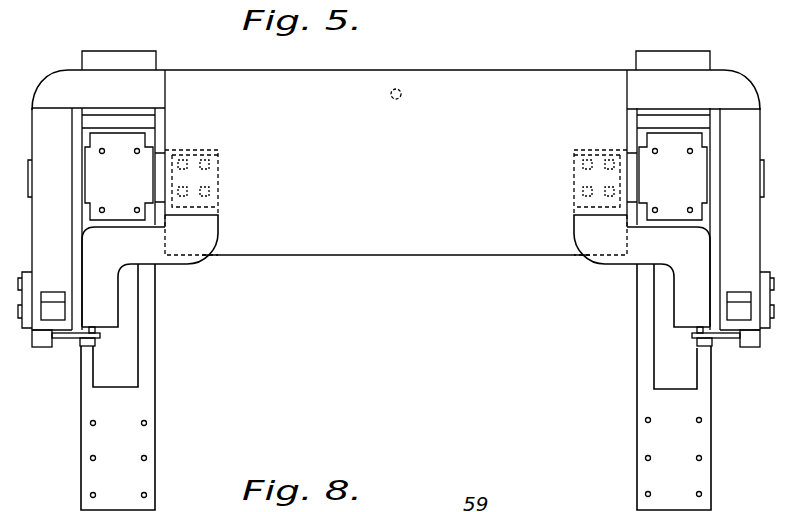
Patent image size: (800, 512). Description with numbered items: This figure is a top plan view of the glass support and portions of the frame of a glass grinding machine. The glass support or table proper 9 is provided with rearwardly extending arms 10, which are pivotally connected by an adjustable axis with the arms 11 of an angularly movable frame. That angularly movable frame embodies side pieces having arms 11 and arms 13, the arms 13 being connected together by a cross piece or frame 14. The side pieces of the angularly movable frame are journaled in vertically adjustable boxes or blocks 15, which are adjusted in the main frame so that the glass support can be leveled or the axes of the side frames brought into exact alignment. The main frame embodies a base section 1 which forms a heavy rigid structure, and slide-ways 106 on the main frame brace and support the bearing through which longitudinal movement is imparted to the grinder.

The base section 1 is at (152, 438).
The glass support 9 is at (396, 172).
The rearwardly extending arms 10 is at (396, 238).
The arms 11 is at (396, 300).
The arms 13 is at (396, 200).
The cross piece 14 is at (148, 82).
The bearing blocks 15 is at (396, 176).
The slide-ways 106 is at (132, 361).